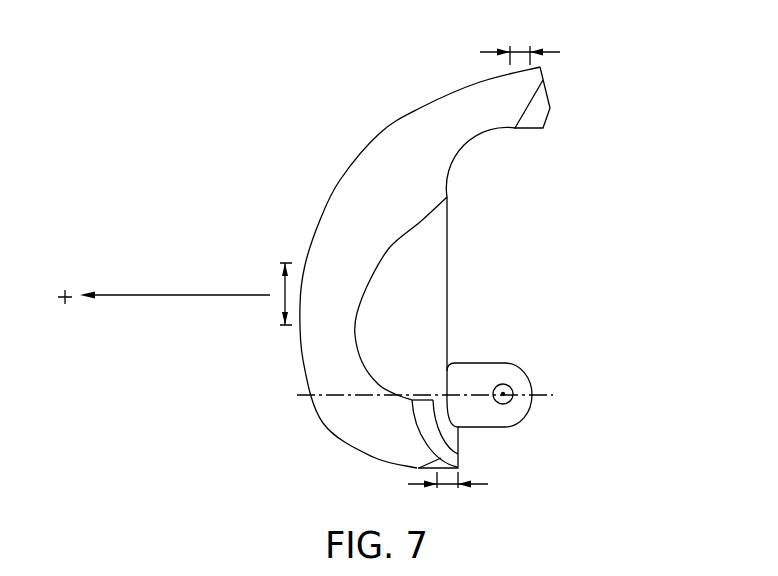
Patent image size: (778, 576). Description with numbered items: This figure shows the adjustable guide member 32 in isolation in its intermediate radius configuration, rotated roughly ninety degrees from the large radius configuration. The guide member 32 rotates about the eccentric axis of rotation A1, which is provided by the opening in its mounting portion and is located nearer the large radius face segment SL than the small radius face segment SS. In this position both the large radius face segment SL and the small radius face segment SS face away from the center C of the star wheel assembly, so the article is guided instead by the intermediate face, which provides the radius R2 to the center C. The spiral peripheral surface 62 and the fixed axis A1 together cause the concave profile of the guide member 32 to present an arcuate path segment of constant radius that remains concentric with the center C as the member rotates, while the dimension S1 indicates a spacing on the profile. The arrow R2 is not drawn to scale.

The adjustable guide member 32 is at (468, 267).
The spiral peripheral surface 62 is at (337, 187).
The eccentric axis of rotation A1 is at (503, 394).
The center of the star wheel assembly C is at (63, 293).
The radius provided by the intermediate radius face segment R2 is at (187, 297).
The dimension S1 is at (282, 282).
The small radius face segment SS is at (523, 53).
The large radius face segment SL is at (447, 485).